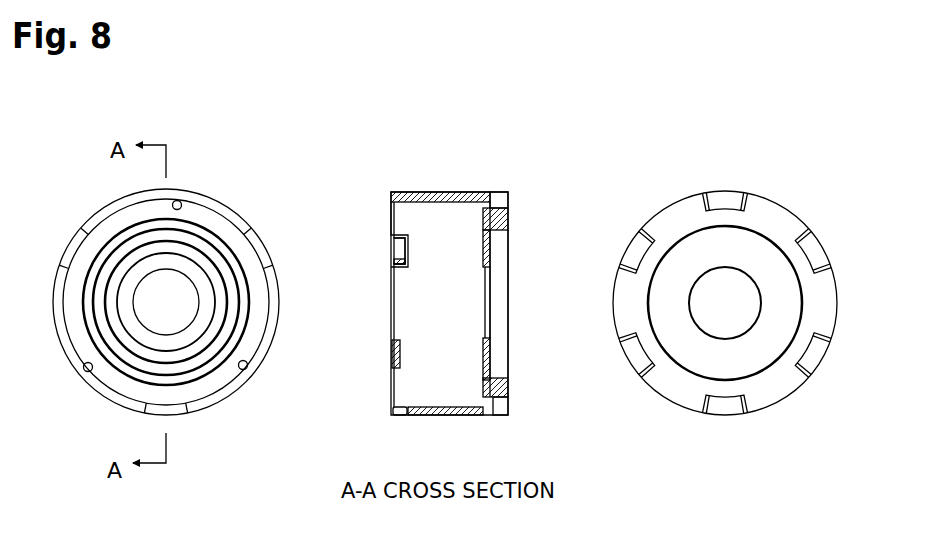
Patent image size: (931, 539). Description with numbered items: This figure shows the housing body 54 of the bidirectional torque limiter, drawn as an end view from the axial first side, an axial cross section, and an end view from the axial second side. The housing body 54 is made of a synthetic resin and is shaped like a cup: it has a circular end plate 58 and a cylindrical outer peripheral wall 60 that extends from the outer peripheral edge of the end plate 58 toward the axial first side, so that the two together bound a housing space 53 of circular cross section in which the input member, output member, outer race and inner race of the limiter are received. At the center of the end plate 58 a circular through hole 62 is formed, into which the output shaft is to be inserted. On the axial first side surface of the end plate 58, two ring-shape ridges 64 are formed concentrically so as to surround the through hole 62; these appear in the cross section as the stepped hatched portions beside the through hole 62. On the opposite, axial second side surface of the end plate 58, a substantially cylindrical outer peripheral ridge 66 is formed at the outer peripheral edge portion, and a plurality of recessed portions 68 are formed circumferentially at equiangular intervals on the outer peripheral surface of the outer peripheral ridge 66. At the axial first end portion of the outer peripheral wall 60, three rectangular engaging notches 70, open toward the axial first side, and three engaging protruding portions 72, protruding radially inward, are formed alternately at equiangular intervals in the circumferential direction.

The housing body 54 is at (467, 100).
The housing space 53 is at (450, 309).
The cylindrical outer peripheral wall 60 is at (427, 189).
The engaging notch 70 is at (72, 248).
The engaging protruding portion 72 is at (182, 206).
The end plate 58 is at (493, 247).
The through hole 62 is at (178, 314).
The ring-shape ridge 64 is at (483, 388).
The outer peripheral ridge 66 is at (511, 390).
The recessed portion 68 is at (502, 415).